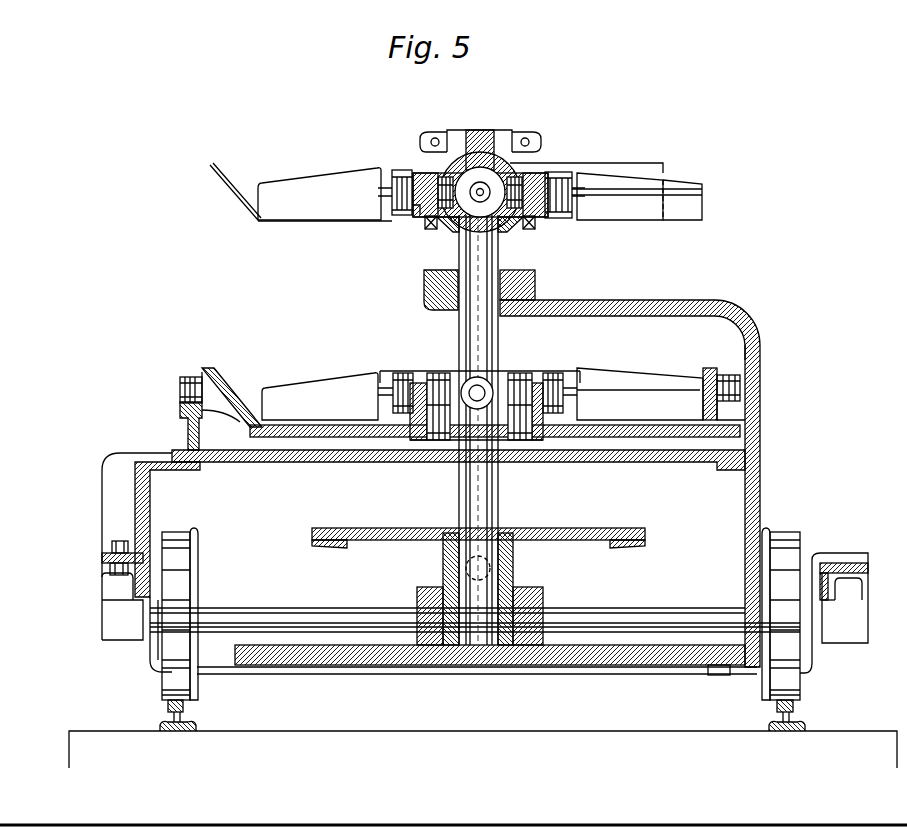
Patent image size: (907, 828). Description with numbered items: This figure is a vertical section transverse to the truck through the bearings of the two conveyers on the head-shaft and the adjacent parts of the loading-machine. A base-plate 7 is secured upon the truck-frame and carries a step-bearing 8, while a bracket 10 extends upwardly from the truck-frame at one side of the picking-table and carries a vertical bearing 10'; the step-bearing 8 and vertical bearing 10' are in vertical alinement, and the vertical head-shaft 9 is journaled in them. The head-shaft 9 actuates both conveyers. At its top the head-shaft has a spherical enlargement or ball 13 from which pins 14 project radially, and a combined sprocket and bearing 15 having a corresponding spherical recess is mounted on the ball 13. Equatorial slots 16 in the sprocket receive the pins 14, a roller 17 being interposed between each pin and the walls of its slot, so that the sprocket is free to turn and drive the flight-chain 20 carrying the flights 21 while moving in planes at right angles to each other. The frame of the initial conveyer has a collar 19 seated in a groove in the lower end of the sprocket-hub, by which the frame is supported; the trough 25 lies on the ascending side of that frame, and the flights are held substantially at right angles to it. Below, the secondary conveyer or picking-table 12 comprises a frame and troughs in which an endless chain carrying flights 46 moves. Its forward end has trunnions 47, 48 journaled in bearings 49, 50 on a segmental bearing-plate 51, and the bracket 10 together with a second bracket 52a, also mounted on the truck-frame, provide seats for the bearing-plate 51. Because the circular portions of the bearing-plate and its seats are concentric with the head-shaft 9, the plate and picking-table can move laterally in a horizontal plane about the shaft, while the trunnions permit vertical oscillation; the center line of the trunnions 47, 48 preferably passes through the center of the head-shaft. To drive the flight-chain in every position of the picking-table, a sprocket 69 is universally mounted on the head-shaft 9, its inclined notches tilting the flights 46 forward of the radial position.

The base-plate 7 is at (605, 645).
The step-bearing 8 is at (516, 580).
The head-shaft 9 is at (500, 497).
The bracket 10 is at (646, 483).
The vertical bearing 10' is at (453, 302).
The secondary conveyer (picking-table) 12 is at (230, 395).
The ball 13 is at (512, 182).
The pins 14 is at (428, 180).
The combined sprocket and bearing 15 is at (418, 222).
The equatorial slots 16 is at (446, 178).
The roller 17 is at (430, 230).
The collar 19 is at (425, 240).
The flight-chain 20 is at (566, 220).
The flights 21 is at (480, 194).
The trough 25 is at (243, 204).
The flights 46 is at (495, 402).
The trunnion 47 is at (180, 389).
The trunnion 48 is at (740, 388).
The bearing 49 is at (197, 375).
The bearing 50 is at (756, 368).
The segmental bearing-plate 51 is at (382, 462).
The second bracket 52a is at (152, 508).
The sprocket 69 is at (532, 383).